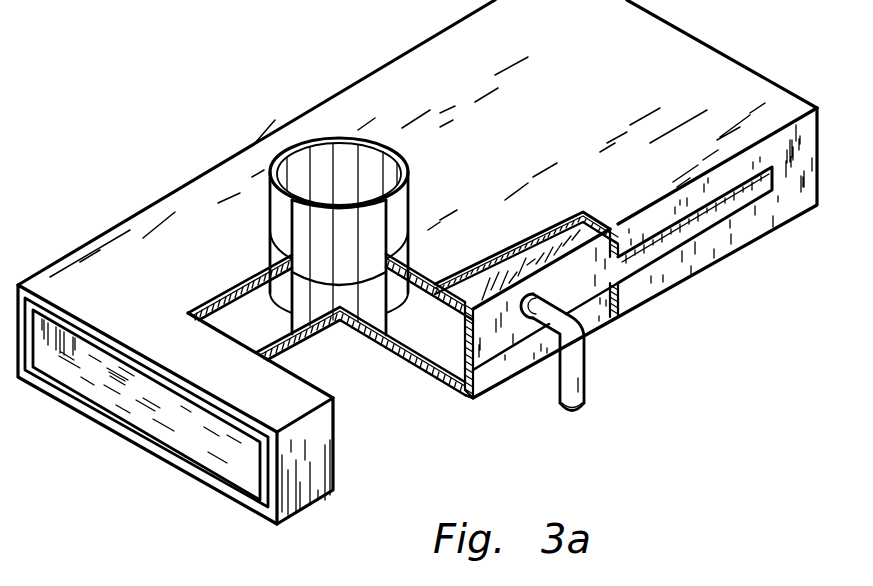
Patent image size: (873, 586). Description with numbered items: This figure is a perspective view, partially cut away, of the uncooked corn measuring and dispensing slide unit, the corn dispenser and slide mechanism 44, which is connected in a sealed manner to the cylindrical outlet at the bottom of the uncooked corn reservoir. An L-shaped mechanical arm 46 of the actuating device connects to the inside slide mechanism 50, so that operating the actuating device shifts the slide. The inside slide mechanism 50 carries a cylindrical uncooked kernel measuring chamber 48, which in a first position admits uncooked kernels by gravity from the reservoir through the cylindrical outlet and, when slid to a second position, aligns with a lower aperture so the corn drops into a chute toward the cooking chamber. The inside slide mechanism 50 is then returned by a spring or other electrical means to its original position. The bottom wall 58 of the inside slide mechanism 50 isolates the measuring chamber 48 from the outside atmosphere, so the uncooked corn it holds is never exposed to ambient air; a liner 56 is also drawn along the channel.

The corn dispenser and slide mechanism 44 is at (154, 63).
The mechanical arm 46 is at (585, 392).
The uncooked kernel measuring chamber 48 is at (343, 237).
The inside slide mechanism 50 is at (588, 300).
The liner wall 56 is at (447, 315).
The bottom wall 58 is at (445, 372).